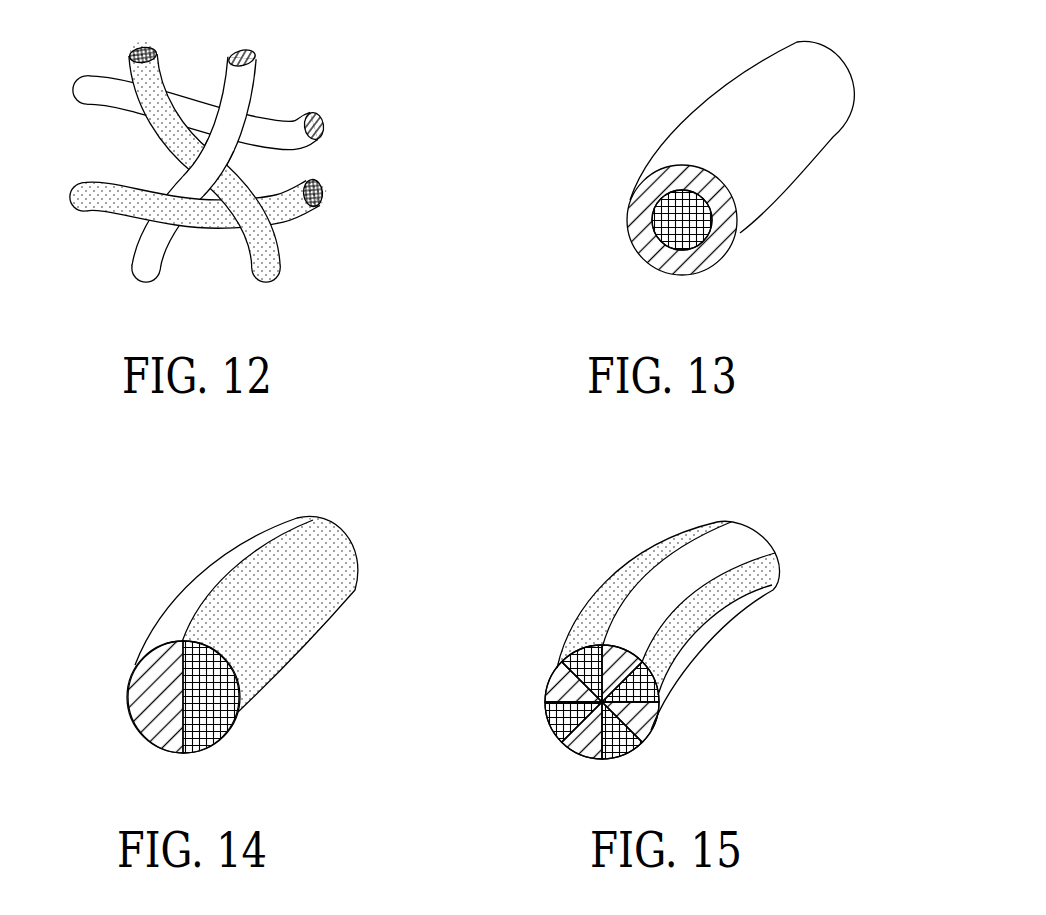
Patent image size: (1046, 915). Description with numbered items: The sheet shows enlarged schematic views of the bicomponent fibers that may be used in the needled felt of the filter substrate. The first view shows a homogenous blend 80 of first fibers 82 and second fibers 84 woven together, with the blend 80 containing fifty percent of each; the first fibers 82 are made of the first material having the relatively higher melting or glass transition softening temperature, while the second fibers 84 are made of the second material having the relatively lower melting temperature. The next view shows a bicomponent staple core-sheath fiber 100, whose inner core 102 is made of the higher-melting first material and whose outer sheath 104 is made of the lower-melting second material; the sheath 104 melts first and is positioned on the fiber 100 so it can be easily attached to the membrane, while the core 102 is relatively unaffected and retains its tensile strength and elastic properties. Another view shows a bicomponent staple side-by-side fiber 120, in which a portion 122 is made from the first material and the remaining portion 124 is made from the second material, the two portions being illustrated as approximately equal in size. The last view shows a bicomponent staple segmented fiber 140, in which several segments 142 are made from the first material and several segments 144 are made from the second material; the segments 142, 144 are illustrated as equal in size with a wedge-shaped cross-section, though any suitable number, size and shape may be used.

In FIG. 12, the blend 80 is at (261, 149).
In FIG. 12, the first fibers 82 is at (150, 75).
In FIG. 12, the second fibers 84 is at (220, 149).
In FIG. 13, the core-sheath fibers 100 is at (728, 166).
In FIG. 13, the inner core 102 is at (673, 250).
In FIG. 13, the outer sheath 104 is at (645, 197).
In FIG. 14, the side-by-side fibers 120 is at (238, 642).
In FIG. 14, the portion 122 is at (213, 727).
In FIG. 14, the remaining portion 124 is at (158, 668).
In FIG. 15, the segmented fibers 140 is at (649, 661).
In FIG. 15, the segments 142 is at (548, 727).
In FIG. 15, the segments 144 is at (558, 683).